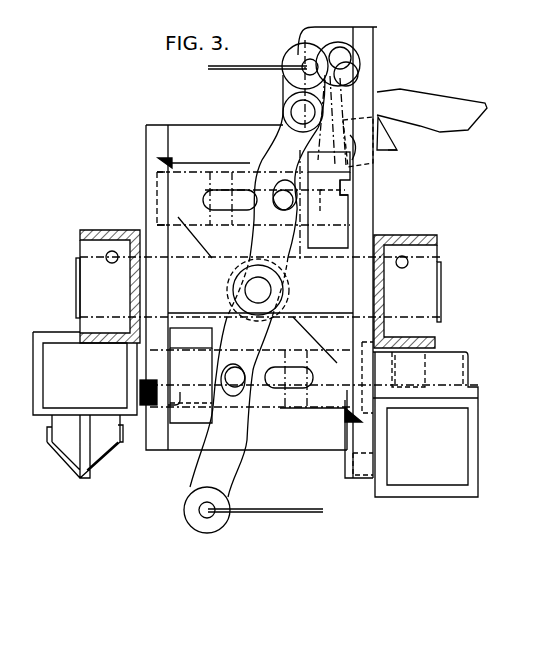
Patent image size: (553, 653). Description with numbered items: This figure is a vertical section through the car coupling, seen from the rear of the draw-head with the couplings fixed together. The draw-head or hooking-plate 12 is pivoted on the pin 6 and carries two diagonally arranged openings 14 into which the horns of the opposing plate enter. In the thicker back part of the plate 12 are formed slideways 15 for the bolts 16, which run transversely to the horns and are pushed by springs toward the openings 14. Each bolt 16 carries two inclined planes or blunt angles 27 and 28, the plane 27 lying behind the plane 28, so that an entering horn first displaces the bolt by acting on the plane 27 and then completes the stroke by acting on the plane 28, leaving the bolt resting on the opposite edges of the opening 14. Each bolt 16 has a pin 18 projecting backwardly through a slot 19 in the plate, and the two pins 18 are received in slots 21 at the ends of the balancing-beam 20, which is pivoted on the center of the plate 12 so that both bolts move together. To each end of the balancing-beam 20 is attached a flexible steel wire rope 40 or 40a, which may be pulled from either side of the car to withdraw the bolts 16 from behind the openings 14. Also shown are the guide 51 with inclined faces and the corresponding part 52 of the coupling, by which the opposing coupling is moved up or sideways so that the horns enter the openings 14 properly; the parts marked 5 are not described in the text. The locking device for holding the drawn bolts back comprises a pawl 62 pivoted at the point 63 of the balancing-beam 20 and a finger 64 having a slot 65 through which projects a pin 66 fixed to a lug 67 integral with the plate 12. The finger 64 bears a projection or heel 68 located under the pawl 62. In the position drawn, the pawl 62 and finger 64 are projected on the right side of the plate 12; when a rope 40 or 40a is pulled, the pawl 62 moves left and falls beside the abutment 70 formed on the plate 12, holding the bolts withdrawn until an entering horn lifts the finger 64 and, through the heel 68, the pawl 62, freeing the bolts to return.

The bracket 5 is at (126, 232).
The pin 6 is at (441, 287).
The hooking-plate 12 is at (227, 127).
The openings 14 is at (260, 250).
The slideways 15 is at (183, 170).
The bolts 16 is at (259, 297).
The pin 18 is at (259, 288).
The slot 19 is at (258, 289).
The balancing-beam 20 is at (257, 290).
The slots 21 is at (268, 168).
The inclined plane 27 is at (345, 183).
The inclined plane 28 is at (147, 362).
The flexible steel wire rope 40 is at (229, 68).
The flexible steel wire rope 40a is at (265, 508).
The guide 51 is at (85, 446).
The corresponding part 52 is at (415, 419).
The pawl 62 is at (432, 110).
The pivot 63 is at (293, 113).
The finger 64 is at (387, 125).
The slot 65 is at (348, 77).
The pin 66 is at (352, 57).
The lug 67 is at (310, 33).
The projection 68 is at (397, 148).
The abutment 70 is at (352, 132).